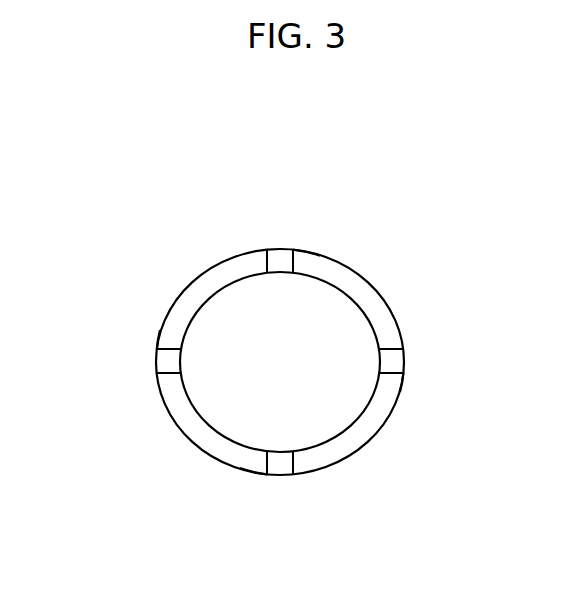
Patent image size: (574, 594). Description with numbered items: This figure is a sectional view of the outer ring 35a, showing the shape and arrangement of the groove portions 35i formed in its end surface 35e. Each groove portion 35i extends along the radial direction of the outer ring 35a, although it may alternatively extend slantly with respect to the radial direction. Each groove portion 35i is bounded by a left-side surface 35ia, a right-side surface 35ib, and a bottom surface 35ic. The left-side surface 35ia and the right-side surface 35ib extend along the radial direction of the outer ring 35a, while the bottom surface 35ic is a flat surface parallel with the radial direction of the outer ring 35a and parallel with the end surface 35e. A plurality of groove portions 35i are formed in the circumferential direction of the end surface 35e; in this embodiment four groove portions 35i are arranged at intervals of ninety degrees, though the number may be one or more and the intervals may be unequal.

The outer ring 35a is at (150, 176).
The end surface 35e is at (188, 422).
The groove portion 35i is at (280, 258).
The left-side surface 35ia is at (270, 260).
The right-side surface 35ib is at (290, 258).
The bottom surface 35ic is at (300, 265).